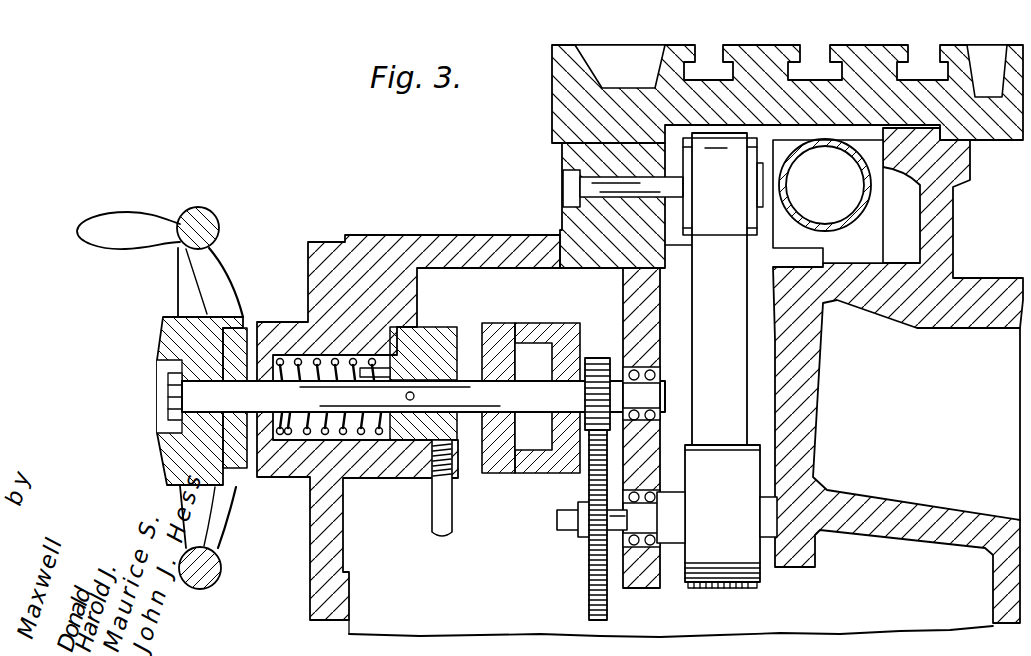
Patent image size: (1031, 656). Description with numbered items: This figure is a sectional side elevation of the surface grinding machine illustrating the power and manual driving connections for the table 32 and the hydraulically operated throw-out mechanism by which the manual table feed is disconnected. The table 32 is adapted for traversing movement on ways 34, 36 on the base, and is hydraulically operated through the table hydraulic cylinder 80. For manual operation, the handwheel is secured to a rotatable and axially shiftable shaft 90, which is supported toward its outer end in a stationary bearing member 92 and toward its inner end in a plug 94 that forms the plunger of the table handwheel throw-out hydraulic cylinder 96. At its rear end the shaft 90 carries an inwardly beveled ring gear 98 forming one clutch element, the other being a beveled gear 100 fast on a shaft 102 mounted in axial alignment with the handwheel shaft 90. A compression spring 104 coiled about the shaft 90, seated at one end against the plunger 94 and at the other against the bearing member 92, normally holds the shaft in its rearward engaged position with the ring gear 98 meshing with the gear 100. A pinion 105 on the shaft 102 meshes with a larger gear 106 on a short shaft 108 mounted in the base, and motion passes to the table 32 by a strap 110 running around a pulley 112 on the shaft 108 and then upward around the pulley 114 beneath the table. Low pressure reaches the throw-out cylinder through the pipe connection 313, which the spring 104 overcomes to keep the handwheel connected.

The table 32 is at (760, 44).
The way 34 is at (562, 157).
The way 36 is at (925, 145).
The table hydraulic cylinder 80 is at (866, 208).
The shaft 90 is at (200, 400).
The stationary bearing member 92 is at (250, 328).
The plug 94 is at (408, 352).
The table handwheel throw-out hydraulic cylinder 96 is at (308, 322).
The inwardly beveled ring gear 98 is at (493, 330).
The beveled gear 100 is at (568, 333).
The shaft 102 is at (657, 393).
The compression spring 104 is at (307, 433).
The pinion 105 is at (600, 358).
The gear 106 is at (590, 590).
The short shaft 108 is at (555, 527).
The strap 110 is at (728, 320).
The pulley 112 is at (705, 555).
The pulley 114 is at (760, 183).
The pipe connection 313 is at (432, 513).